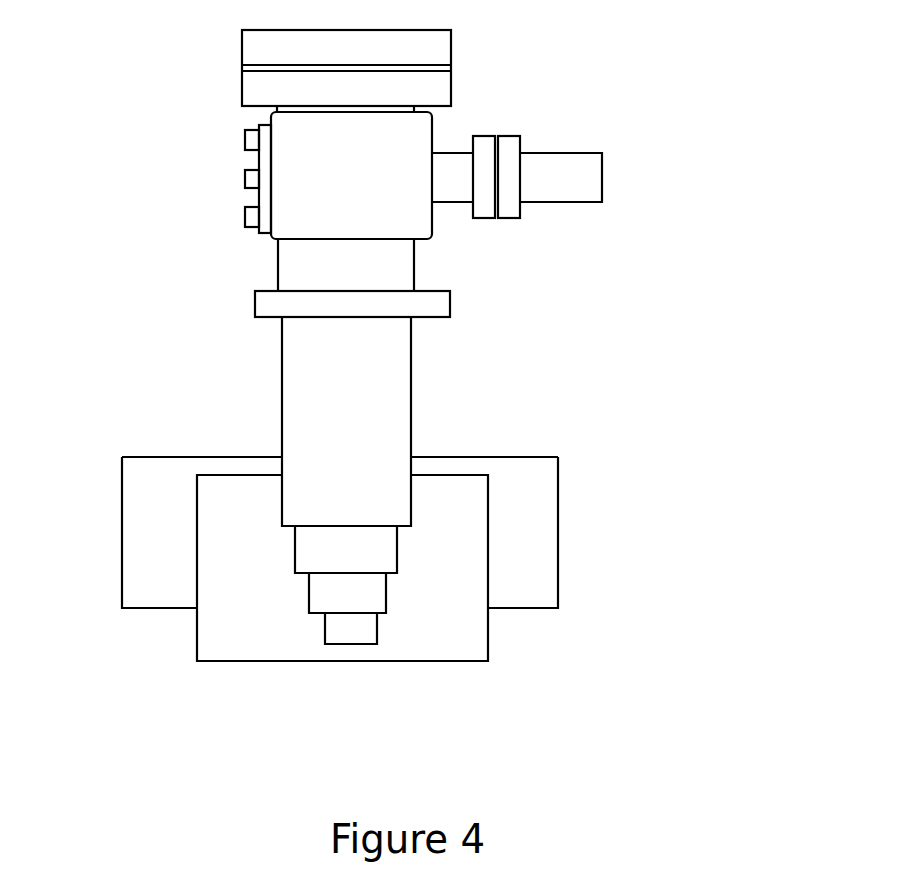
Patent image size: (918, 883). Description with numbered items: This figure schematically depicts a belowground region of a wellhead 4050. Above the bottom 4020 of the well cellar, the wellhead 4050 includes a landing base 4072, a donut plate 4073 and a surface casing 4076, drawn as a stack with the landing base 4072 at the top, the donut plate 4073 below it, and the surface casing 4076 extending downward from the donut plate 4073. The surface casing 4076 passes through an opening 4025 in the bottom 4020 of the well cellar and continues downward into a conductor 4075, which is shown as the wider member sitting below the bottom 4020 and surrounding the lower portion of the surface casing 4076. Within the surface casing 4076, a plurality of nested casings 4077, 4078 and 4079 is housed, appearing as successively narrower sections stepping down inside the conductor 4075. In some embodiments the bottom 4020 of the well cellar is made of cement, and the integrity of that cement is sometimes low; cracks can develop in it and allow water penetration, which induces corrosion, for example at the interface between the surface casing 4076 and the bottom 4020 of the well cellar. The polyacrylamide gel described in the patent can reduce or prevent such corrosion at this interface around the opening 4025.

The wellhead 4050 is at (645, 73).
The landing base 4072 is at (245, 142).
The donut plate 4073 is at (255, 300).
The surface casing 4076 is at (411, 380).
The nested casing 4077 is at (397, 544).
The nested casing 4078 is at (386, 592).
The nested casing 4079 is at (376, 627).
The opening 4025 is at (282, 455).
The bottom of the well cellar 4020 is at (558, 473).
The conductor 4075 is at (197, 647).